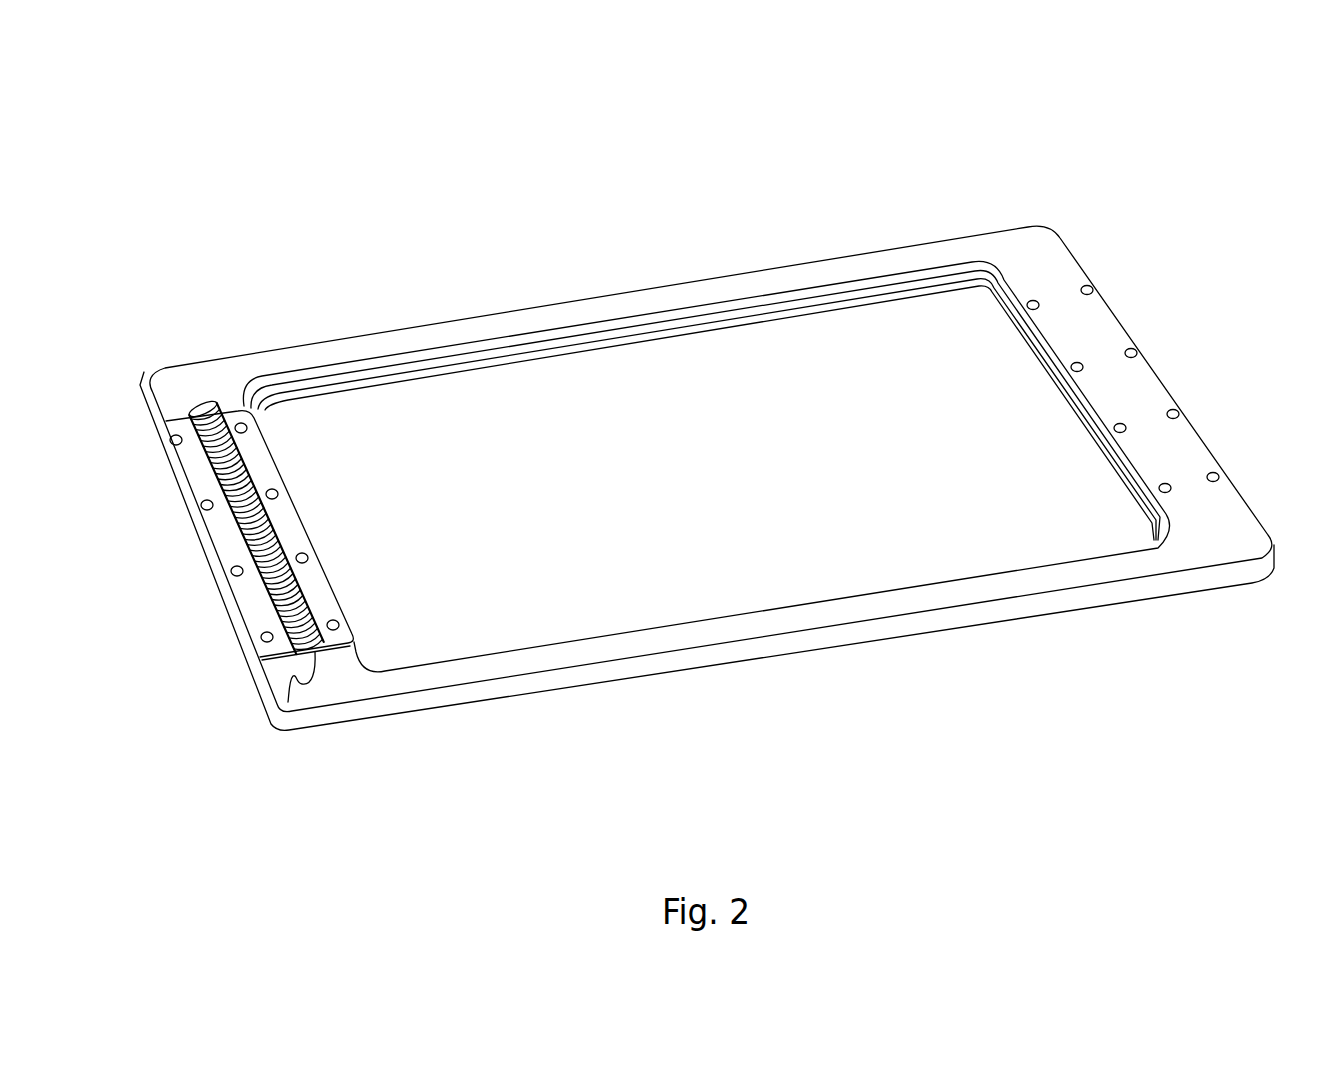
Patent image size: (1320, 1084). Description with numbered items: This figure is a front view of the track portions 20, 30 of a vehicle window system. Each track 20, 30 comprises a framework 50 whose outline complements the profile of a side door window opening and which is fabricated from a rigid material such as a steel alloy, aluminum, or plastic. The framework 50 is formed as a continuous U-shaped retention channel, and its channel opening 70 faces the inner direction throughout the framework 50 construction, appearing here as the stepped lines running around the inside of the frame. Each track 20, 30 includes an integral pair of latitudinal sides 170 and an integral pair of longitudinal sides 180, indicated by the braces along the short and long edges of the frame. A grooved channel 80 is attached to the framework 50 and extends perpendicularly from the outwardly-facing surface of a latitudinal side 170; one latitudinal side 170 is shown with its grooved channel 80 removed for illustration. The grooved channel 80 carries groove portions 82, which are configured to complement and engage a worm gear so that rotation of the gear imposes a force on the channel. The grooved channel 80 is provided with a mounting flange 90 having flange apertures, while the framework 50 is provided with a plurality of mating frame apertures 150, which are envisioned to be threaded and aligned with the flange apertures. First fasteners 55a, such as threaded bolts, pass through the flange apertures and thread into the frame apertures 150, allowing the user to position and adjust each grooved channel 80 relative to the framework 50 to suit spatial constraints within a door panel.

The first track 20 is at (702, 412).
The second track 30 is at (702, 412).
The framework 50 is at (1043, 247).
The first fasteners 55a is at (333, 623).
The channel opening 70 is at (988, 293).
The grooved channel 80 is at (288, 703).
The groove portions 82 is at (258, 483).
The mounting flanges 90 is at (177, 428).
The frame apertures 150 is at (1213, 477).
The latitudinal sides 170 is at (128, 409).
The longitudinal sides 180 is at (1027, 222).